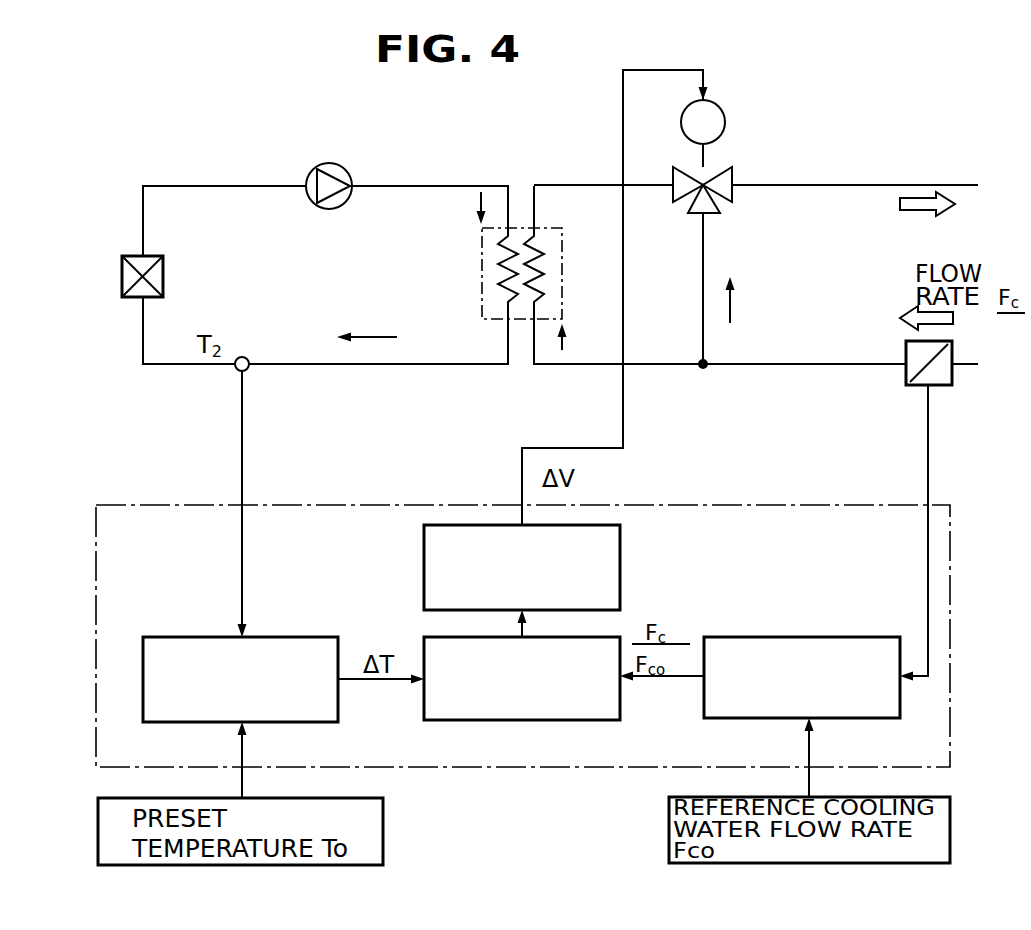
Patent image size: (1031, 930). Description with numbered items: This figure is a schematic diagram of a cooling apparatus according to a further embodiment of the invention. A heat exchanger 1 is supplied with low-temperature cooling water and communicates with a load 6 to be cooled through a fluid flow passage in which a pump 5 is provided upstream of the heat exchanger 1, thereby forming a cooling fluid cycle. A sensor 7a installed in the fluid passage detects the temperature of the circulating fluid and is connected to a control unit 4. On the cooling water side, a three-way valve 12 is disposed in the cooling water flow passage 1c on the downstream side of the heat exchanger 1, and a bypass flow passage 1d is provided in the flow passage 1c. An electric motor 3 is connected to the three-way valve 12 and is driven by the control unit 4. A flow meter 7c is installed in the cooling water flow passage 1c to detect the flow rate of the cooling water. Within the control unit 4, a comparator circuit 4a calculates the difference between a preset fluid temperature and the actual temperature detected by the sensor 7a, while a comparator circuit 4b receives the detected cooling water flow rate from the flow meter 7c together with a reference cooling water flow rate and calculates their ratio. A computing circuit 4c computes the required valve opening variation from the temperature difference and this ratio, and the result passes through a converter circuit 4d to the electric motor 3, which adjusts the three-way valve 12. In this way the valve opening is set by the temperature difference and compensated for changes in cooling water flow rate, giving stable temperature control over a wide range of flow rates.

The heat exchanger 1 is at (482, 259).
The cooling water flow passage 1c is at (535, 345).
The bypass flow passage 1d is at (704, 338).
The electric motor 3 is at (726, 118).
The control unit 4 is at (92, 520).
The comparator circuit 4a is at (265, 722).
The comparator circuit 4b is at (820, 718).
The computing circuit 4c is at (545, 720).
The converter circuit 4d is at (424, 553).
The pump 5 is at (318, 168).
The load 6 is at (143, 254).
The temperature sensor 7a is at (236, 369).
The flow meter 7c is at (953, 378).
The three-way valve 12 is at (718, 208).